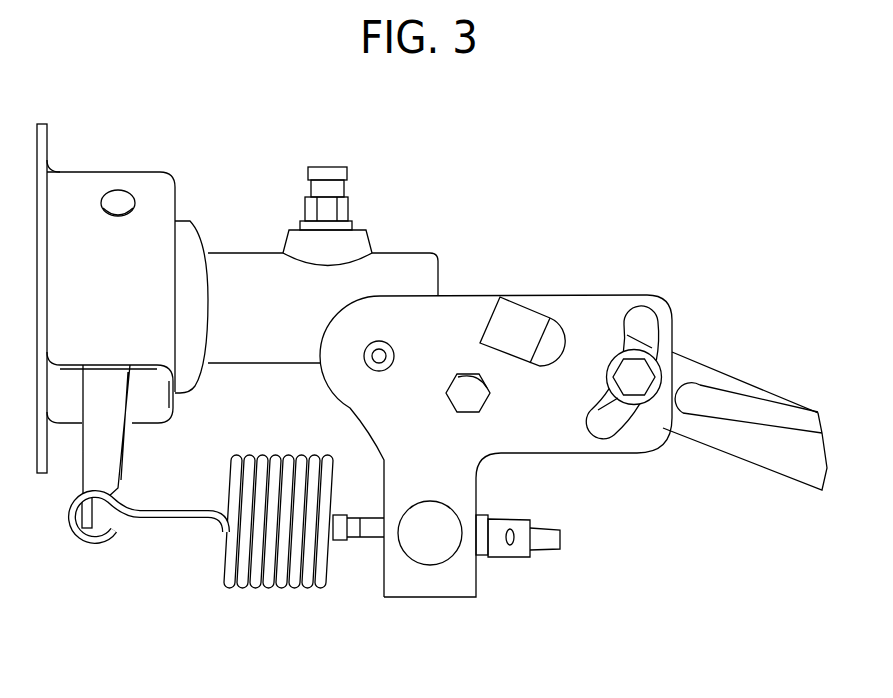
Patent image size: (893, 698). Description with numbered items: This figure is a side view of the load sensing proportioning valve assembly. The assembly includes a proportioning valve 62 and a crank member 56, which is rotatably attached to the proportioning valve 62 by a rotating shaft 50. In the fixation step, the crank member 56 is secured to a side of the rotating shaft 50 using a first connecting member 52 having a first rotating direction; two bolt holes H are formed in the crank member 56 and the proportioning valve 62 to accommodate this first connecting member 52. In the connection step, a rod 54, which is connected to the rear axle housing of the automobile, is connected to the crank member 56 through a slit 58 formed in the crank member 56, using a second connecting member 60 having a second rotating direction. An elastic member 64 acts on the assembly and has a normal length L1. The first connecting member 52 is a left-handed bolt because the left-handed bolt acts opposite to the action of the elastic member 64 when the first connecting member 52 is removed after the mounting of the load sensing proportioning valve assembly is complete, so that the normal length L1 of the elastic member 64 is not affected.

The rotating shaft 50 is at (384, 342).
The first connecting member 52 is at (516, 390).
The rod 54 is at (755, 396).
The crank member 56 is at (566, 294).
The slit 58 is at (637, 313).
The second connecting member 60 is at (644, 398).
The proportioning valve 62 is at (256, 228).
The elastic member 64 is at (220, 562).
The bolt holes H is at (470, 375).
The normal length L1 is at (430, 640).